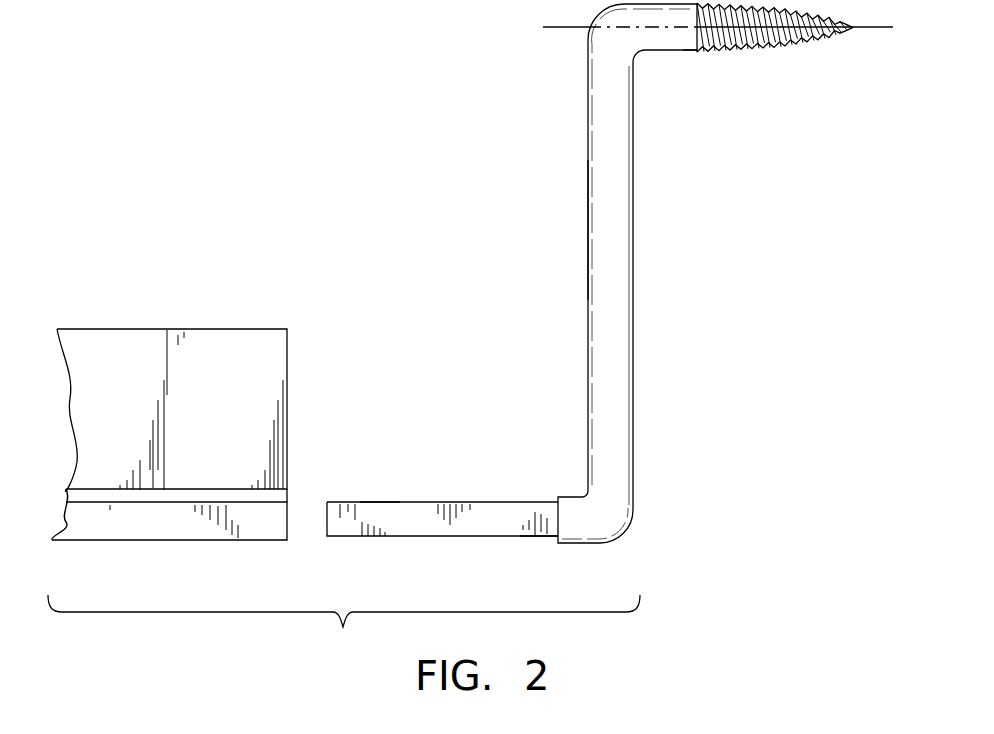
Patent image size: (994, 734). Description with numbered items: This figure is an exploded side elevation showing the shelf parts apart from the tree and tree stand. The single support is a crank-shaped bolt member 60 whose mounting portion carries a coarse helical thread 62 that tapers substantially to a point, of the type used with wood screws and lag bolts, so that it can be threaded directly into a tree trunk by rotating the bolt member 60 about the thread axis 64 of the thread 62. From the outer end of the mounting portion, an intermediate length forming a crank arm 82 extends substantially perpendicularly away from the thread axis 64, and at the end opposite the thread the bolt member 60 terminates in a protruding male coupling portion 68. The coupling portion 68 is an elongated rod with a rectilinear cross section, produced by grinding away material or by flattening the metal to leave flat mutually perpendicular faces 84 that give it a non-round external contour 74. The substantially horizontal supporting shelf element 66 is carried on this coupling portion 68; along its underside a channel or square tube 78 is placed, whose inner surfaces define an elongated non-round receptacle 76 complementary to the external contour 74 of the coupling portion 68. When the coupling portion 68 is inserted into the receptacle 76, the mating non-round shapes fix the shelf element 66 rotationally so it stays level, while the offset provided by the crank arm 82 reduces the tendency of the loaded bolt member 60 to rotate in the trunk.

The bolt member 60 is at (634, 294).
The thread 62 is at (683, 51).
The thread axis 64 is at (872, 28).
The supporting shelf element 66 is at (288, 328).
The coupling portion 68 is at (530, 528).
The external contour 74 is at (490, 502).
The receptacle 76 is at (288, 515).
The square tube 78 is at (135, 522).
The crank arm 82 is at (587, 162).
The flat faces 84 is at (369, 502).